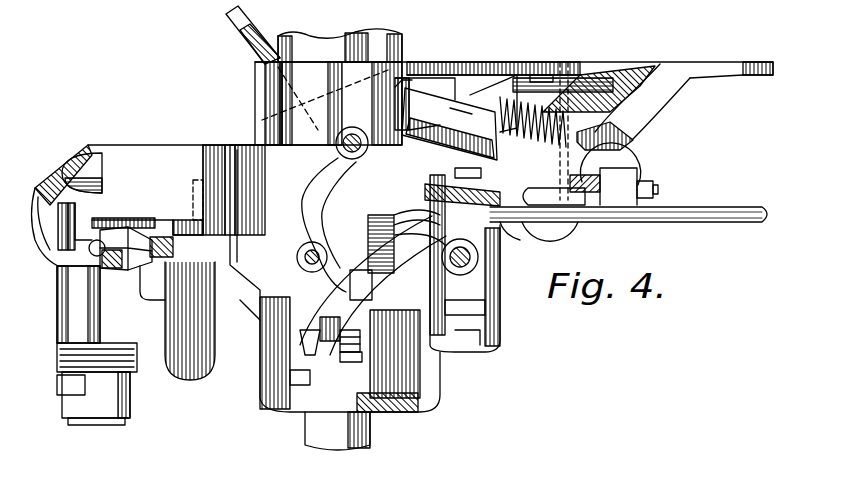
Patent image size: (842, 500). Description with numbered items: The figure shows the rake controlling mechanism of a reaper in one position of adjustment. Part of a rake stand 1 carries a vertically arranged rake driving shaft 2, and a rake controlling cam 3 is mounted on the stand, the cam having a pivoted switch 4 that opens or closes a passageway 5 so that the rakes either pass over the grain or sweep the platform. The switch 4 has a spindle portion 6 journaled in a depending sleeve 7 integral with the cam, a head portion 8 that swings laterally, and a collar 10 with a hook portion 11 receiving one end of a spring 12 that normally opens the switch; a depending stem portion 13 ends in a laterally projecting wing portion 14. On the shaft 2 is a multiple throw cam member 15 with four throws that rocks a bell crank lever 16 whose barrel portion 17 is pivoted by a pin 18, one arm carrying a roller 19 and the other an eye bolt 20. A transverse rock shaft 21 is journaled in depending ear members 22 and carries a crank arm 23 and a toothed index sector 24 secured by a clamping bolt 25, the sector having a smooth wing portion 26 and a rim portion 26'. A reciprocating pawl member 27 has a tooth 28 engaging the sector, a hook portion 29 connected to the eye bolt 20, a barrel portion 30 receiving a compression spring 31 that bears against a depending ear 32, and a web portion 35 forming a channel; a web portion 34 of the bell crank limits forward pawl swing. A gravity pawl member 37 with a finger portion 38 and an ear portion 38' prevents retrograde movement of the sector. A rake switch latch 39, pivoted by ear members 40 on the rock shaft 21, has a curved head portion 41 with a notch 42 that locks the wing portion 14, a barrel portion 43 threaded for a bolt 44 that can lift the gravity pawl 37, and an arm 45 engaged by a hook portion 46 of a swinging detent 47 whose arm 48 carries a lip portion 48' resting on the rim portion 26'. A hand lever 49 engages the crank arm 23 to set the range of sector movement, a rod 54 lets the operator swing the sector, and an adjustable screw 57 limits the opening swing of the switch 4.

The rake stand 1 is at (288, 412).
The rake driving shaft 2 is at (330, 436).
The rake controlling cam 3 is at (538, 64).
The pivoted switch 4 is at (164, 145).
The passageway 5 is at (128, 228).
The spindle portion 6 is at (100, 424).
The depending sleeve 7 is at (66, 303).
The head portion 8 is at (192, 148).
The collar 10 is at (70, 400).
The hook portion 11 is at (62, 386).
The spring 12 is at (137, 364).
The stem portion 13 is at (192, 205).
The wing portion 14 is at (205, 305).
The multiple throw cam member 15 is at (255, 93).
The bell crank lever 16 is at (475, 92).
The barrel portion 17 is at (520, 62).
The pin 18 is at (546, 232).
The roller 19 is at (422, 80).
The eye bolt 20 is at (590, 208).
The rock shaft 21 is at (478, 262).
The ear members 22 is at (500, 320).
The crank arm 23 is at (530, 222).
The toothed index sector 24 is at (416, 338).
The clamping bolt 25 is at (472, 350).
The wing portion 26 is at (470, 195).
The rim portion 26' is at (359, 244).
The reciprocating pawl member 27 is at (492, 86).
The tooth 28 is at (455, 95).
The hook portion 29 is at (560, 222).
The barrel portion 30 is at (452, 106).
The compression spring 31 is at (542, 146).
The depending ear 32 is at (620, 172).
The web portion 34 is at (585, 183).
The web portion 35 is at (417, 212).
The gravity pawl member 37 is at (343, 183).
The finger portion 38 is at (352, 124).
The ear portion 38' is at (416, 53).
The rake switch latch 39 is at (253, 278).
The ear members 40 is at (486, 305).
The curved head portion 41 is at (240, 262).
The notch 42 is at (296, 257).
The barrel portion 43 is at (350, 353).
The bolt 44 is at (350, 362).
The arm 45 is at (306, 352).
The hook portion 46 is at (304, 385).
The swinging detent 47 is at (262, 322).
The arm 48 is at (347, 266).
The lip portion 48' is at (482, 173).
The hand lever 49 is at (244, 30).
The rod 54 is at (700, 222).
The adjustable screw 57 is at (89, 250).